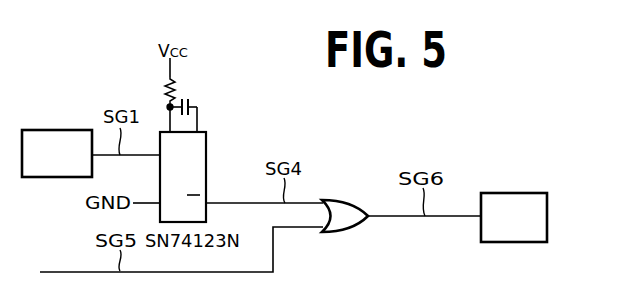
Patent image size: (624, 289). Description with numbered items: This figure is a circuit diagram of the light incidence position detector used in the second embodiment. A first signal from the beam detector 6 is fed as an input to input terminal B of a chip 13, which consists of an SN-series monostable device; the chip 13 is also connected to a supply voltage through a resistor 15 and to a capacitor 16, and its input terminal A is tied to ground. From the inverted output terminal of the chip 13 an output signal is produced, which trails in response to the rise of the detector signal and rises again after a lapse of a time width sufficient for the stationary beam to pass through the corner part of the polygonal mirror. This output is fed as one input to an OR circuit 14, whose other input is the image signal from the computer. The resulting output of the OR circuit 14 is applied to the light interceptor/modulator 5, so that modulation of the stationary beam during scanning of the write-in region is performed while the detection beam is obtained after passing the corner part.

The light interceptor/modulator 5 is at (514, 217).
The beam detector 6 is at (57, 153).
The chip 13 is at (206, 143).
The OR circuit 14 is at (341, 200).
The resistor 15 is at (167, 85).
The capacitor 16 is at (190, 102).